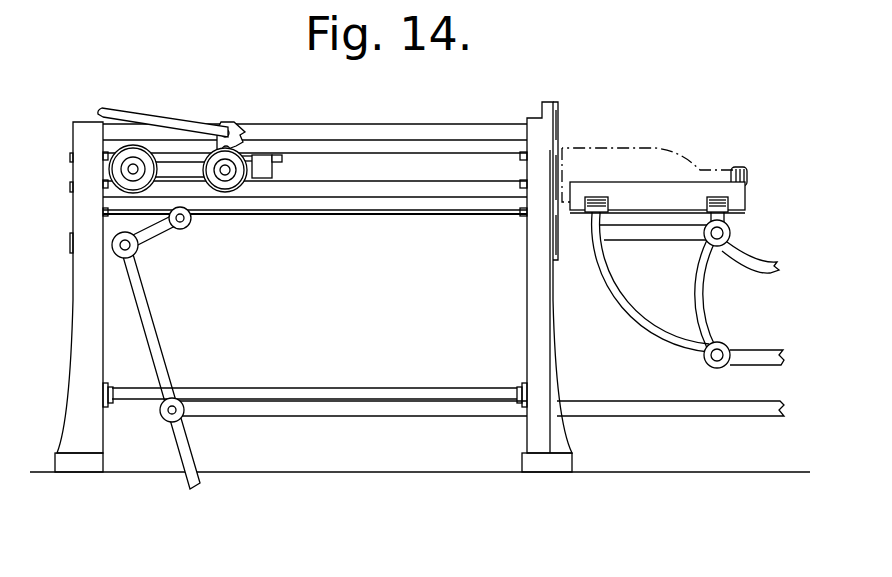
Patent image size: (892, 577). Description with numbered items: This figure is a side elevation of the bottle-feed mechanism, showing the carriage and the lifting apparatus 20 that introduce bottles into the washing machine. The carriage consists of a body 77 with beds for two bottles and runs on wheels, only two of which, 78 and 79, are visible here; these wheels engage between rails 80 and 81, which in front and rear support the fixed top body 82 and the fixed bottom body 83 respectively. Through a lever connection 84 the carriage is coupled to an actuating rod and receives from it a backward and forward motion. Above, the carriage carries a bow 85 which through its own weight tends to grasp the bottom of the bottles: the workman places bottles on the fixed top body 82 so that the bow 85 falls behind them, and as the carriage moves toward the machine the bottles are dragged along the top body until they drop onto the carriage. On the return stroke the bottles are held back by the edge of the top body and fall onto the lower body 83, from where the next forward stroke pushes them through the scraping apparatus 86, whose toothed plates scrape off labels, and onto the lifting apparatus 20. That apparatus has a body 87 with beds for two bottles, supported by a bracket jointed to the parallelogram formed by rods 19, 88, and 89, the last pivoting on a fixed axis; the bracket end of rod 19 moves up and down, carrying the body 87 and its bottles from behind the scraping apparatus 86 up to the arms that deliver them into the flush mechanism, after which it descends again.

The rod 19 is at (752, 354).
The lifting apparatus 20 is at (651, 233).
The body 77 is at (272, 170).
The wheel 78 is at (128, 188).
The wheel 79 is at (225, 189).
The rail 80 is at (400, 133).
The rail 81 is at (435, 204).
The fixed top body 82 is at (270, 124).
The fixed bottom body 83 is at (332, 211).
The lever connection 84 is at (138, 284).
The bow 85 is at (137, 120).
The scraping apparatus 86 is at (560, 142).
The body 87 is at (628, 191).
The parallelogram rod 88 is at (698, 283).
The parallelogram rod 89 is at (757, 262).